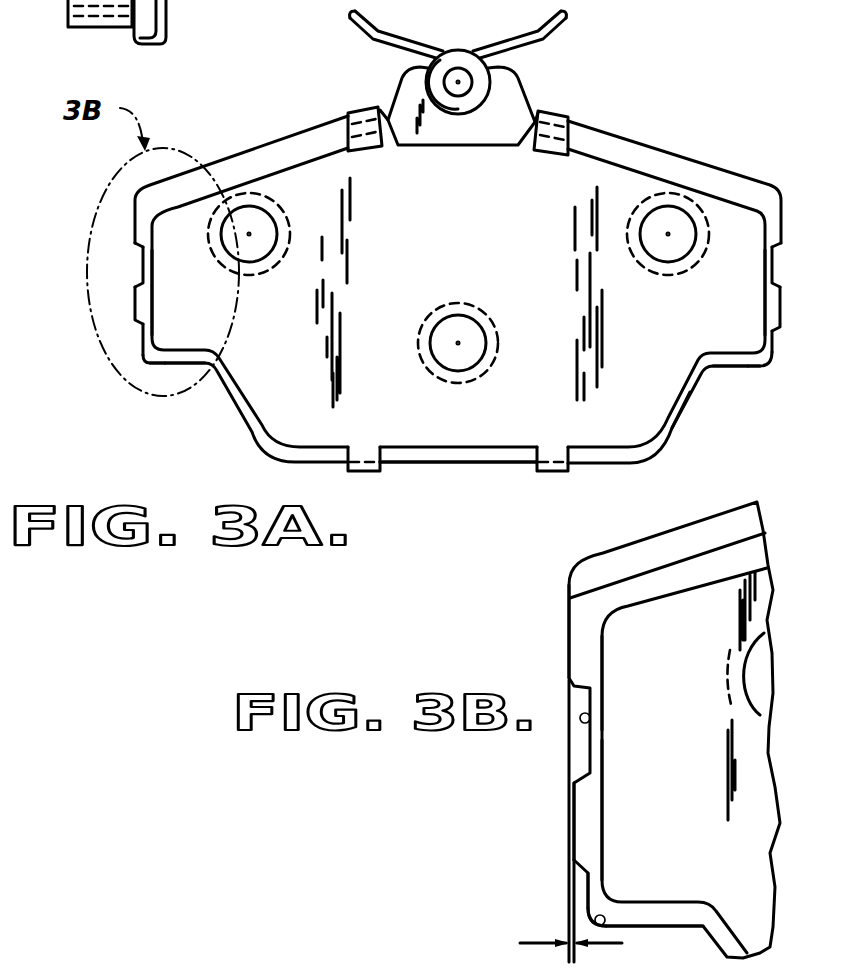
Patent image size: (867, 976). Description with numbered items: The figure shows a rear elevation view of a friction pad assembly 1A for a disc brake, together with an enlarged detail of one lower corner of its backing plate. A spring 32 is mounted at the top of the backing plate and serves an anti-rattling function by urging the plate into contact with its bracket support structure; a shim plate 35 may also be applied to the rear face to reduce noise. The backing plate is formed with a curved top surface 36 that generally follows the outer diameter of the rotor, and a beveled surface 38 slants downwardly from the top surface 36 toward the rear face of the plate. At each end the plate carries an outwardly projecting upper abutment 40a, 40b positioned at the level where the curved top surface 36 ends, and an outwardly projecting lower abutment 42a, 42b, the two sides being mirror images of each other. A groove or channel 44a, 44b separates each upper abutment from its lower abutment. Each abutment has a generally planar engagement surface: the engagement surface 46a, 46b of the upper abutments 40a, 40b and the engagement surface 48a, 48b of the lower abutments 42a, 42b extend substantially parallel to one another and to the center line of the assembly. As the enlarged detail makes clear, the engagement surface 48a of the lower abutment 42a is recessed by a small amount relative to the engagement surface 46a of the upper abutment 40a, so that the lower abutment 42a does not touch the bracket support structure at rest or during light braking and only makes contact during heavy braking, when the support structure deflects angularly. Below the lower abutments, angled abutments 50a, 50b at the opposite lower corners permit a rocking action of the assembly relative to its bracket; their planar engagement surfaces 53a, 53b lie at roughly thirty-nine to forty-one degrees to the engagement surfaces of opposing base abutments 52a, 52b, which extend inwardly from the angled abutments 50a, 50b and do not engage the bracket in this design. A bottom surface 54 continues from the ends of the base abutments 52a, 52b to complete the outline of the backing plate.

In FIG. 3A, the brake pad assembly 1A is at (261, 115).
In FIG. 3A, the spring 32 is at (562, 22).
In FIG. 3A, the lower edge of backing plate 35 is at (645, 407).
In FIG. 3A, the curved top surface 36 is at (616, 130).
In FIG. 3B, the curved top surface 36 is at (665, 530).
In FIG. 3A, the beveled surface 38 is at (670, 153).
In FIG. 3B, the beveled surface 38 is at (740, 520).
In FIG. 3A, the upper abutment 40a is at (148, 229).
In FIG. 3B, the upper abutment 40a is at (590, 655).
In FIG. 3A, the upper abutment 40b is at (764, 230).
In FIG. 3A, the lower abutment 42a is at (147, 305).
In FIG. 3B, the lower abutment 42a is at (587, 823).
In FIG. 3A, the lower abutment 42b is at (764, 317).
In FIG. 3A, the channel 44a is at (143, 262).
In FIG. 3B, the channel 44a is at (590, 720).
In FIG. 3A, the channel 44b is at (783, 262).
In FIG. 3A, the engagement surface 46a is at (135, 217).
In FIG. 3B, the engagement surface 46a is at (570, 633).
In FIG. 3A, the engagement surface 46b is at (783, 222).
In FIG. 3A, the engagement surface 48a is at (140, 320).
In FIG. 3B, the engagement surface 48a is at (568, 808).
In FIG. 3A, the engagement surface 48b is at (783, 306).
In FIG. 3A, the angled abutment 50a is at (150, 355).
In FIG. 3B, the angled abutment 50a is at (602, 900).
In FIG. 3A, the angled abutment 50b is at (772, 352).
In FIG. 3A, the base abutment 52a is at (175, 363).
In FIG. 3B, the base abutment 52a is at (668, 916).
In FIG. 3A, the base abutment 52b is at (735, 369).
In FIG. 3A, the engagement surface 53a is at (152, 358).
In FIG. 3B, the engagement surface 53a is at (605, 922).
In FIG. 3A, the engagement surface 53b is at (770, 365).
In FIG. 3A, the bottom surface 54 is at (446, 463).